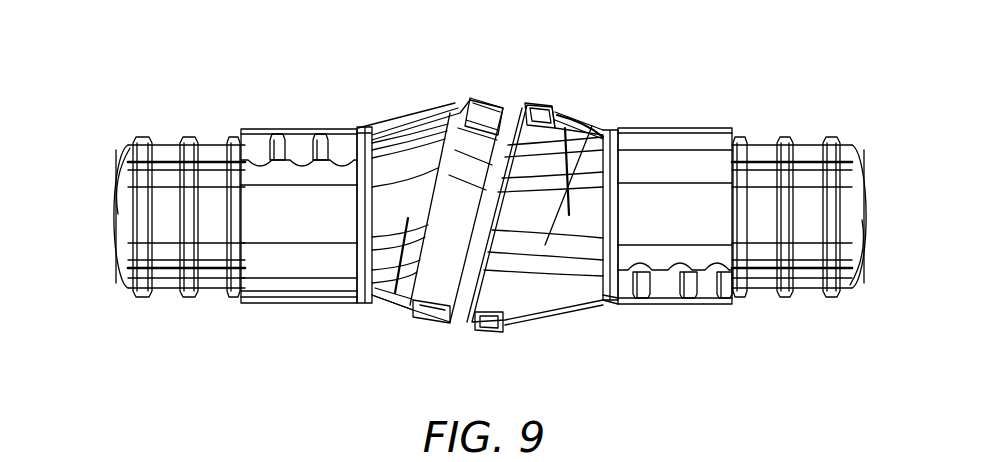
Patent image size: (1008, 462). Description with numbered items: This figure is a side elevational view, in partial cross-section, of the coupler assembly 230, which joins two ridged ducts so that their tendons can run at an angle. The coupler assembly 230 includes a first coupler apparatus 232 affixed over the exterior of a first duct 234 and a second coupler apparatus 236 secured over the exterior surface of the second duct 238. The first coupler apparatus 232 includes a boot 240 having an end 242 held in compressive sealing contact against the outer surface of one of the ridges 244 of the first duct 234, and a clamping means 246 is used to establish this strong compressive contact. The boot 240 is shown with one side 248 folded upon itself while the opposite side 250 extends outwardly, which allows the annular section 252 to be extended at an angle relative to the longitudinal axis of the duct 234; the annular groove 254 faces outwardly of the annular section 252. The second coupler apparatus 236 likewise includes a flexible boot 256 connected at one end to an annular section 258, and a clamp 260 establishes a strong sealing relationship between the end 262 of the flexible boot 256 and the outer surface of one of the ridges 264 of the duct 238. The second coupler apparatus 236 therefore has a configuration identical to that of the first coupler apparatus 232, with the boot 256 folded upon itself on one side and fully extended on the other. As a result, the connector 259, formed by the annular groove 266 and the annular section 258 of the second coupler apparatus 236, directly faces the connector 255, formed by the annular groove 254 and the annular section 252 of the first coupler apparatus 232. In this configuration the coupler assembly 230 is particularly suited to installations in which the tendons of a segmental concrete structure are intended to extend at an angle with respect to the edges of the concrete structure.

The coupler assembly 230 is at (713, 79).
The first coupler apparatus 232 is at (710, 137).
The first duct 234 is at (807, 147).
The second coupler apparatus 236 is at (320, 127).
The second duct 238 is at (168, 146).
The boot 240 is at (605, 306).
The end 242 is at (703, 303).
The ridges 244 is at (790, 297).
The clamping means 246 is at (673, 132).
The one side 248 is at (579, 114).
The opposite side 250 is at (548, 320).
The annular section 252 is at (530, 270).
The annular groove 254 is at (497, 332).
The connector 255 is at (488, 326).
The flexible boot 256 is at (377, 307).
The annular section 258 is at (445, 152).
The connector 259 is at (468, 98).
The clamp 260 is at (312, 302).
The end 262 is at (272, 128).
The ridges 264 is at (140, 296).
The annular groove 266 is at (435, 322).